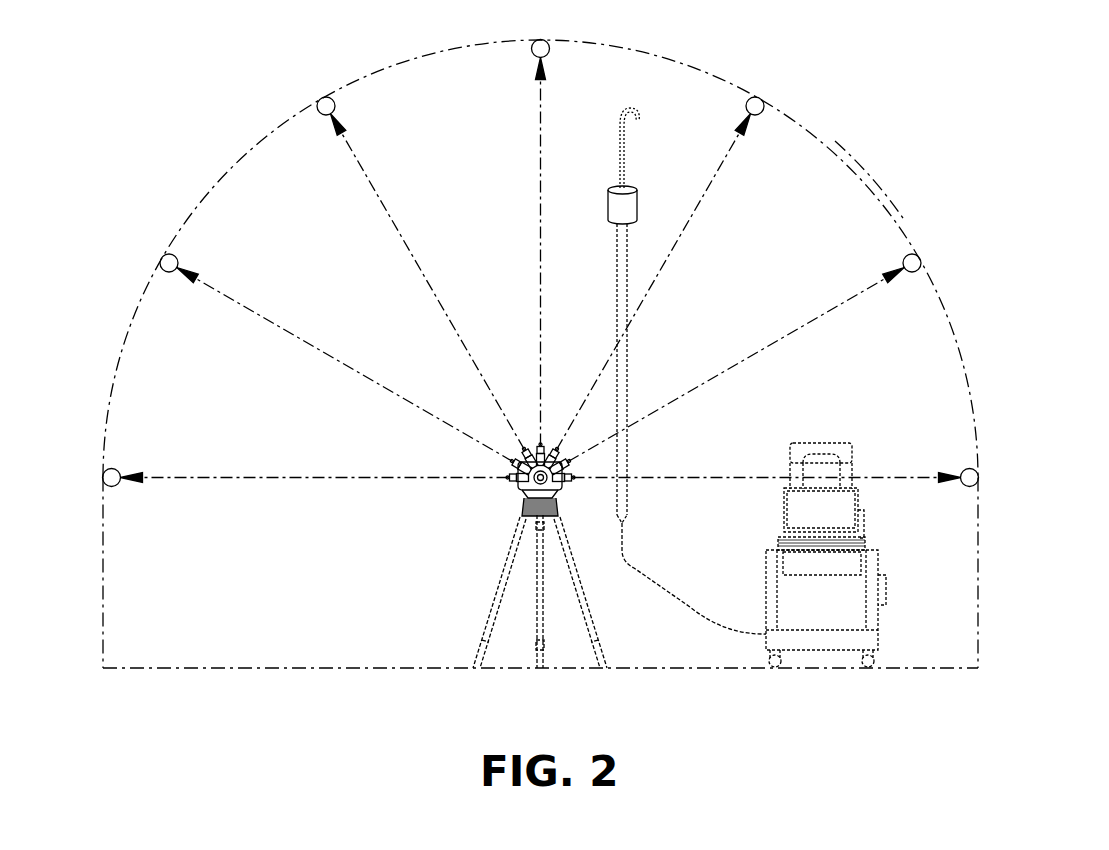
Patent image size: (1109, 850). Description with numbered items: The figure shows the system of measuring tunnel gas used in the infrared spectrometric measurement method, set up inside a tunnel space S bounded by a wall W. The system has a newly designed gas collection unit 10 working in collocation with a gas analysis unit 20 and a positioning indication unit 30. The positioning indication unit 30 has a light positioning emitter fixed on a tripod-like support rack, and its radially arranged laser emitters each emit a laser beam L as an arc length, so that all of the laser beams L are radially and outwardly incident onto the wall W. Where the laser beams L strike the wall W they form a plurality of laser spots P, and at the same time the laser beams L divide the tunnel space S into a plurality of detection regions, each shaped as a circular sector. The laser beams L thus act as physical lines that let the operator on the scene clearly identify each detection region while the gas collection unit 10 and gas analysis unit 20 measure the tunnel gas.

The gas collection unit 10 is at (621, 289).
The gas analysis unit 20 is at (855, 450).
The positioning indication unit 30 is at (505, 576).
The tunnel space S is at (168, 366).
The wall W is at (866, 179).
The laser spot P is at (757, 98).
The laser beam L is at (688, 225).